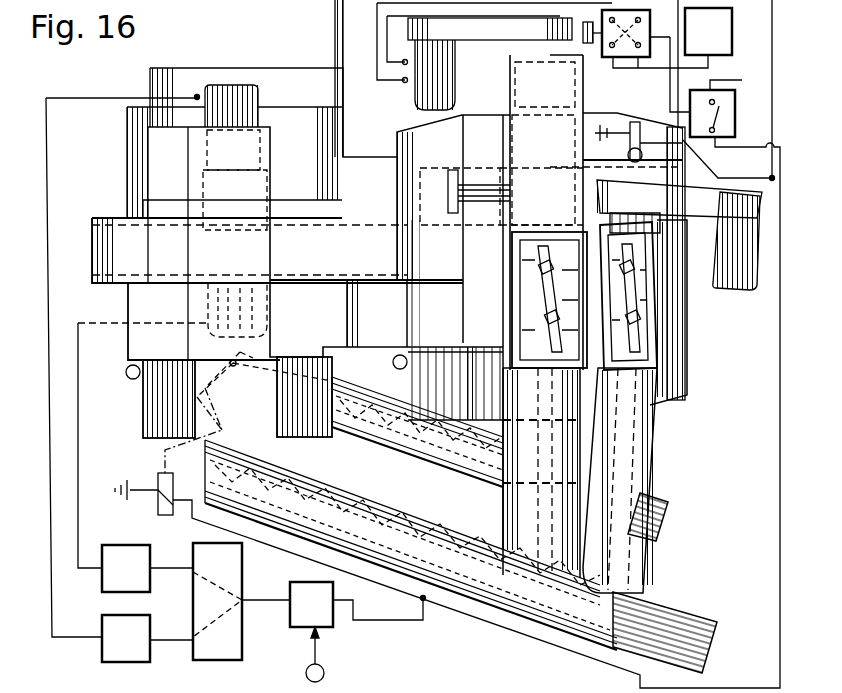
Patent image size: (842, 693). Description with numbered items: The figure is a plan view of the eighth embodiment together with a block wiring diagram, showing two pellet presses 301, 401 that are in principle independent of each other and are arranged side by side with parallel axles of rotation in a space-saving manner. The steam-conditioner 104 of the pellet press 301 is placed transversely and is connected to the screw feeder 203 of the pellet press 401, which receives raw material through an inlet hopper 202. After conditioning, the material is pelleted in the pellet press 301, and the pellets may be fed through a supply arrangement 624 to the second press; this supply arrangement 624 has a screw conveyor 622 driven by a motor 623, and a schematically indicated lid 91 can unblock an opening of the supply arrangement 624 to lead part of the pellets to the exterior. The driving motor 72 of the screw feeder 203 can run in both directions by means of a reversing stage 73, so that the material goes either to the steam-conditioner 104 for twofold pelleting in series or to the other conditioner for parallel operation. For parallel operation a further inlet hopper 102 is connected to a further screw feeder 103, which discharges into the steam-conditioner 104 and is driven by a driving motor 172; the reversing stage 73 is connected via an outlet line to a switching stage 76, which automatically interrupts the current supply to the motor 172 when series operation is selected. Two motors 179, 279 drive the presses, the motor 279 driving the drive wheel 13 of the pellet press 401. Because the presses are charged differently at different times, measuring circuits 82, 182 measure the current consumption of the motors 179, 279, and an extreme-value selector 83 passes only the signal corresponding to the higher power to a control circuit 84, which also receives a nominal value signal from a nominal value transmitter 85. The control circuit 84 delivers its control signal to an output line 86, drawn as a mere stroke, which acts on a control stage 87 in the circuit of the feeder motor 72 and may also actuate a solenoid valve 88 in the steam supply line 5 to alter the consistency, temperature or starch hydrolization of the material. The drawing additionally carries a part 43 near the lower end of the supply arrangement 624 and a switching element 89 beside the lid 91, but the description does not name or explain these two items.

The steam supply line 5 is at (682, 156).
The drive wheel 13 is at (434, 166).
The roller 43 is at (608, 642).
The driving motor 72 is at (445, 66).
The reversing stage 73 is at (612, 58).
The switching stage 76 is at (735, 125).
The measuring circuit 82 is at (114, 650).
The extreme-value selector 83 is at (245, 635).
The control circuit 84 is at (300, 615).
The nominal value transmitter 85 is at (325, 668).
The output line 86 is at (778, 567).
The control stage 87 is at (696, 42).
The solenoid valve 88 is at (642, 120).
The switch 89 is at (158, 474).
The lid 91 is at (248, 412).
The inlet hopper 102 is at (657, 322).
The screw feeder 103 is at (632, 463).
The steam-conditioner 104 is at (302, 468).
The driving motor 172 is at (742, 292).
The motor 179 is at (268, 312).
The measuring circuit 182 is at (126, 568).
The inlet hopper 202 is at (508, 293).
The screw feeder 203 is at (528, 518).
The motor 279 is at (237, 78).
The pellet press 301 is at (113, 198).
The pellet press 401 is at (690, 425).
The screw conveyor 622 is at (380, 367).
The motor 623 is at (658, 493).
The supply arrangement 624 is at (393, 453).